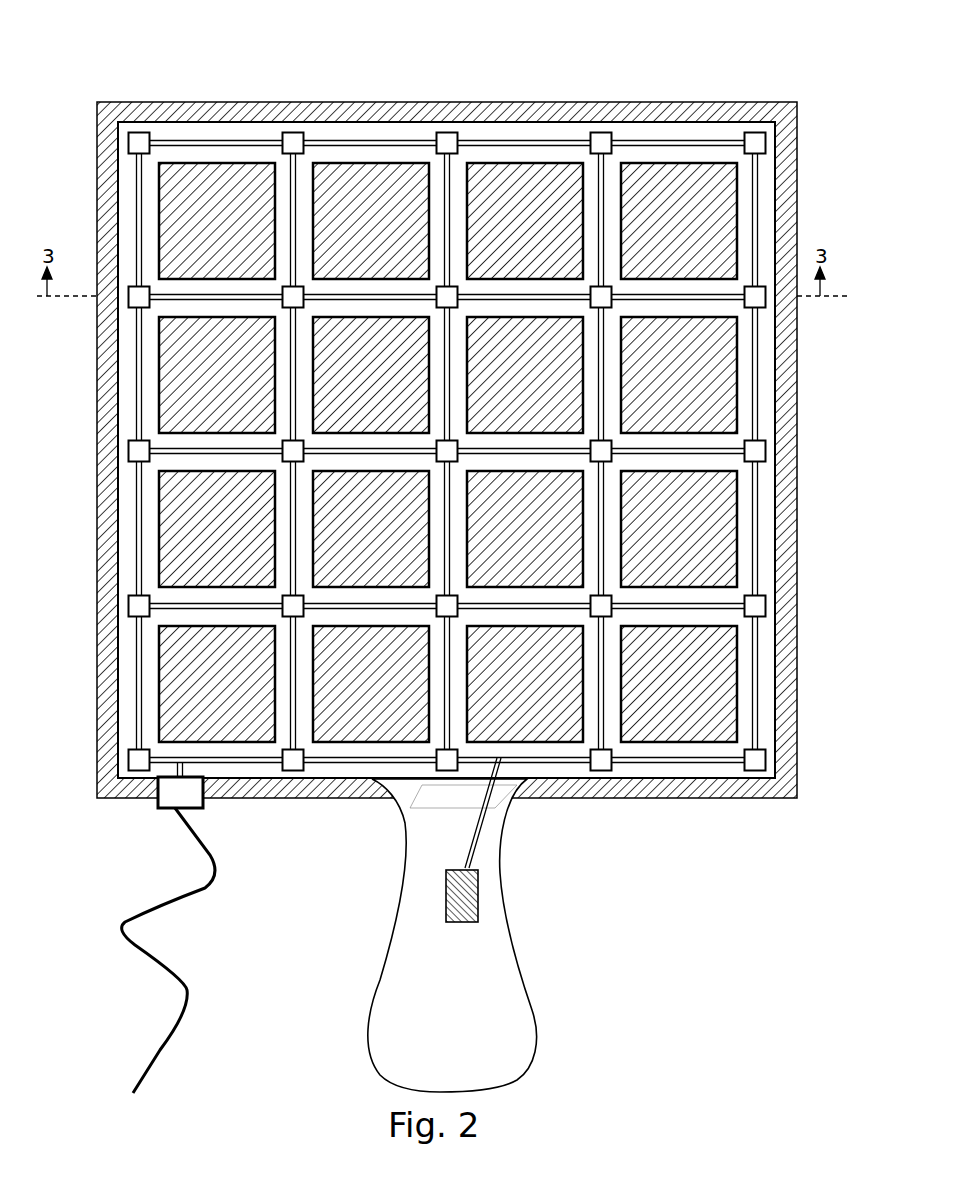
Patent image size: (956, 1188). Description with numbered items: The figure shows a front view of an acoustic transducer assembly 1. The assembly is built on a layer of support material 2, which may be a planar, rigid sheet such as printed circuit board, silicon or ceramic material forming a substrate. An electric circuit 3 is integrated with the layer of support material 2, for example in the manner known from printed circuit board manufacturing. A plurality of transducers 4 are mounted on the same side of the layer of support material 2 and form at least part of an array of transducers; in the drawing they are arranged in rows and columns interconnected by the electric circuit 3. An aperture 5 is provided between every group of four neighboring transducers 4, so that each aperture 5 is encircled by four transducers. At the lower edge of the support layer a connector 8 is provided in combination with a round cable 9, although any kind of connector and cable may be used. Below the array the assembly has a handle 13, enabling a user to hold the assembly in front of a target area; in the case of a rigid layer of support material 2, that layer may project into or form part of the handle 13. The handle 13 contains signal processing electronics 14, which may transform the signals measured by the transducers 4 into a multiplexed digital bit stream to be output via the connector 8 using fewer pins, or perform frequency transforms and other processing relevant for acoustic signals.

The device 1 is at (447, 558).
The layer of support material 2 is at (252, 122).
The electric circuit 3 is at (387, 140).
The transducers 4 is at (448, 132).
The aperture 5 is at (678, 162).
The connector 8 is at (207, 795).
The round cable 9 is at (180, 973).
The handle 13 is at (538, 1015).
The signal processing electronics 14 is at (462, 922).